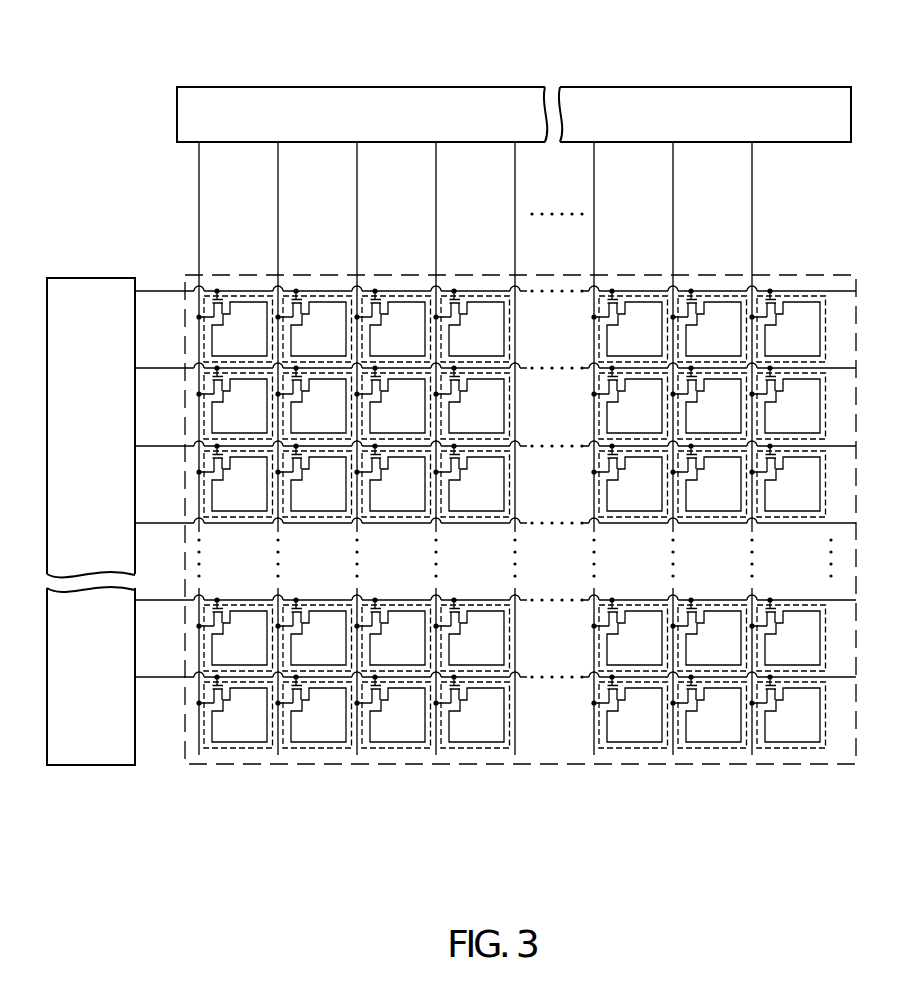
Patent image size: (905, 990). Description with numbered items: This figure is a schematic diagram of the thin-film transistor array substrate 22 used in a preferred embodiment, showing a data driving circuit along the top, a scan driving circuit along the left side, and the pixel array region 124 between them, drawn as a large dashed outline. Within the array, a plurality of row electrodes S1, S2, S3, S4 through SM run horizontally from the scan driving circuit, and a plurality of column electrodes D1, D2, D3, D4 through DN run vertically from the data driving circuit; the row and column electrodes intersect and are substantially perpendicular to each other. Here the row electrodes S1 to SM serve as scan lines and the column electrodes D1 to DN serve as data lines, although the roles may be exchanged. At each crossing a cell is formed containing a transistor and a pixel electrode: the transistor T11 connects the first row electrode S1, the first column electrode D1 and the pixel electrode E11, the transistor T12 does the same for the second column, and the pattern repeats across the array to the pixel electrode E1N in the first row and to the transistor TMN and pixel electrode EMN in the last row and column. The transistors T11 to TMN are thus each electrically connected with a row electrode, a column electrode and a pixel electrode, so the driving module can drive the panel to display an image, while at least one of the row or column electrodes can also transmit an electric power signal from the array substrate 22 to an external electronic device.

The array substrate 22 is at (179, 46).
The display panel / pixel array 124 is at (721, 275).
The column electrode D1 is at (201, 197).
The column electrode D2 is at (280, 197).
The column electrode D3 is at (359, 197).
The column electrode D4 is at (438, 197).
The column electrode DN is at (753, 197).
The row electrode S1 is at (177, 289).
The row electrode S2 is at (177, 366).
The row electrode S3 is at (177, 444).
The row electrode S4 is at (177, 521).
The row electrode SM is at (177, 676).
The transistor T11 is at (214, 276).
The transistor T12 is at (305, 275).
The transistor TMN is at (756, 739).
The pixel electrode E11 is at (242, 293).
The pixel electrode E1N is at (798, 294).
The pixel electrode EMN is at (811, 746).